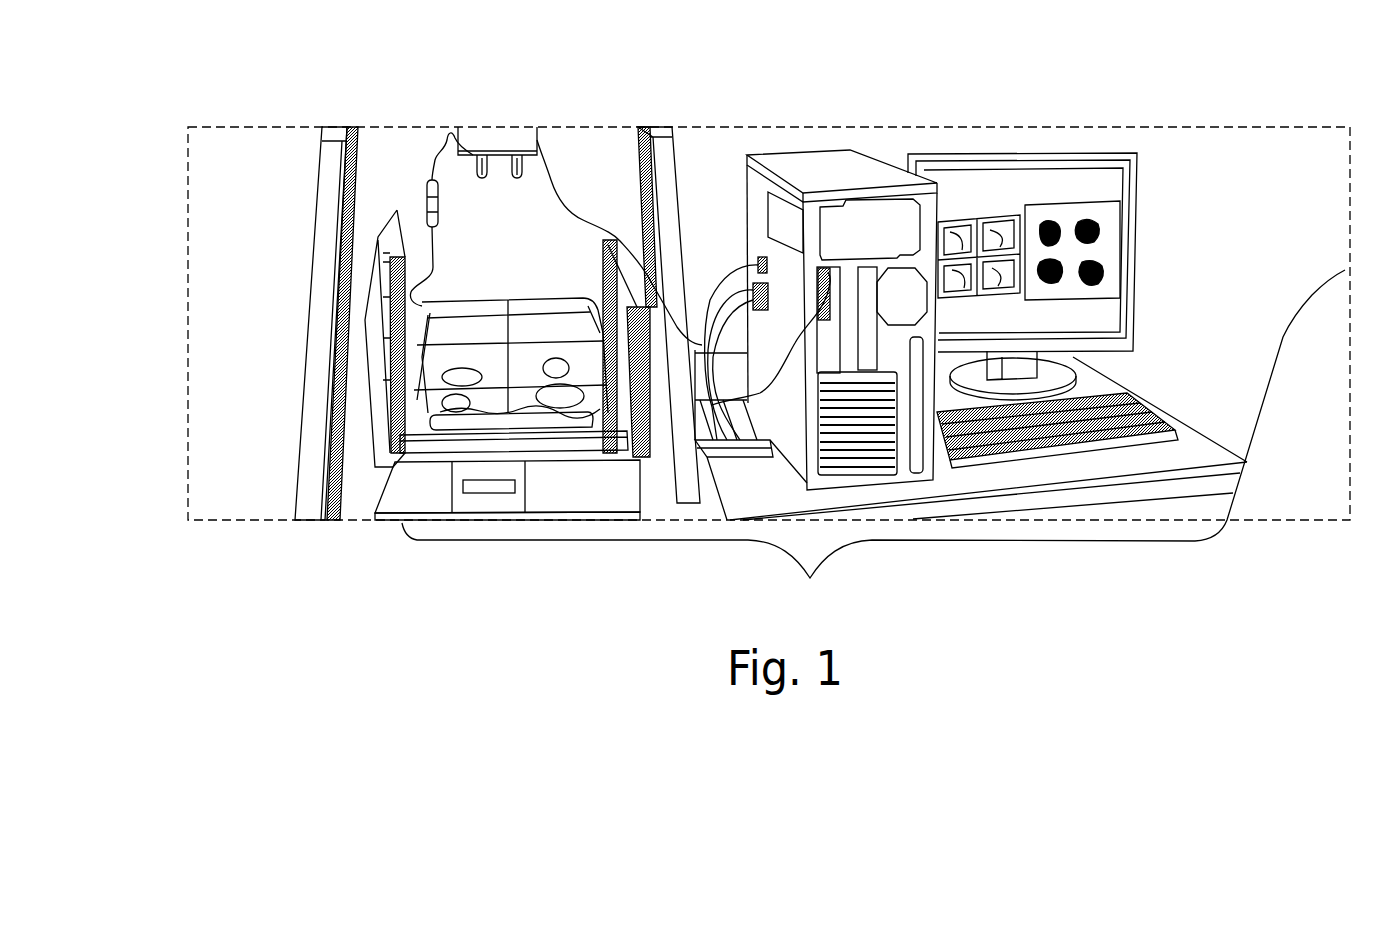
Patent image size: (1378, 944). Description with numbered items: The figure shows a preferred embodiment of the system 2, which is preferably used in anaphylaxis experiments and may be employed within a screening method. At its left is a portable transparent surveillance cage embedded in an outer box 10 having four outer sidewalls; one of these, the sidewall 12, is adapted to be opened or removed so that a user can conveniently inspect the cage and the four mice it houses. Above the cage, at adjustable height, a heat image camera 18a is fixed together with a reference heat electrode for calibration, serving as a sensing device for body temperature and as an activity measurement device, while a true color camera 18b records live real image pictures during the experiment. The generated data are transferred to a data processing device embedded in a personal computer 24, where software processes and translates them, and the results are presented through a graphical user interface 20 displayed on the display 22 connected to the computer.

The system 2 is at (769, 370).
The outer box 10 is at (372, 391).
The sidewall 12 is at (405, 491).
The heat image camera 18a is at (470, 152).
The true color camera 18b is at (519, 145).
The graphical user interface 20 is at (1093, 185).
The display 22 is at (1033, 145).
The personal computer 24 is at (827, 158).